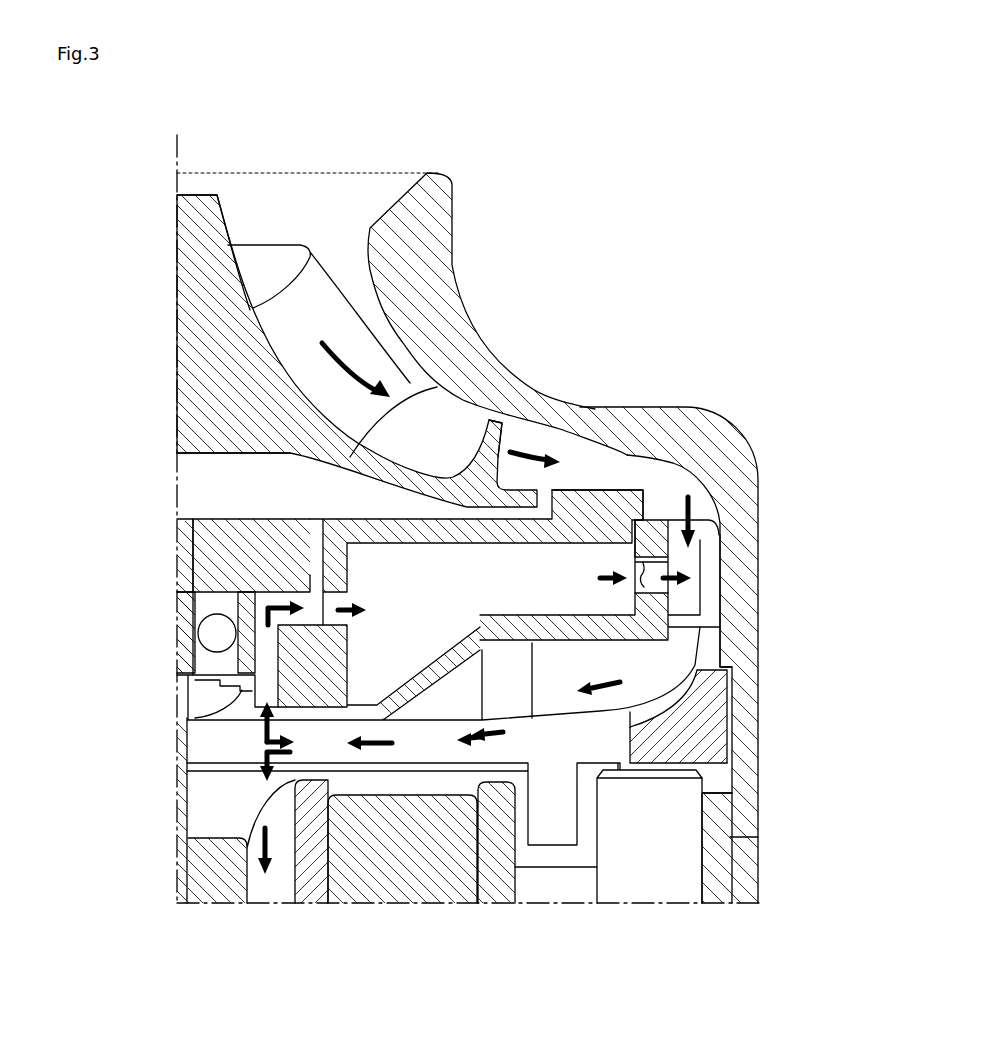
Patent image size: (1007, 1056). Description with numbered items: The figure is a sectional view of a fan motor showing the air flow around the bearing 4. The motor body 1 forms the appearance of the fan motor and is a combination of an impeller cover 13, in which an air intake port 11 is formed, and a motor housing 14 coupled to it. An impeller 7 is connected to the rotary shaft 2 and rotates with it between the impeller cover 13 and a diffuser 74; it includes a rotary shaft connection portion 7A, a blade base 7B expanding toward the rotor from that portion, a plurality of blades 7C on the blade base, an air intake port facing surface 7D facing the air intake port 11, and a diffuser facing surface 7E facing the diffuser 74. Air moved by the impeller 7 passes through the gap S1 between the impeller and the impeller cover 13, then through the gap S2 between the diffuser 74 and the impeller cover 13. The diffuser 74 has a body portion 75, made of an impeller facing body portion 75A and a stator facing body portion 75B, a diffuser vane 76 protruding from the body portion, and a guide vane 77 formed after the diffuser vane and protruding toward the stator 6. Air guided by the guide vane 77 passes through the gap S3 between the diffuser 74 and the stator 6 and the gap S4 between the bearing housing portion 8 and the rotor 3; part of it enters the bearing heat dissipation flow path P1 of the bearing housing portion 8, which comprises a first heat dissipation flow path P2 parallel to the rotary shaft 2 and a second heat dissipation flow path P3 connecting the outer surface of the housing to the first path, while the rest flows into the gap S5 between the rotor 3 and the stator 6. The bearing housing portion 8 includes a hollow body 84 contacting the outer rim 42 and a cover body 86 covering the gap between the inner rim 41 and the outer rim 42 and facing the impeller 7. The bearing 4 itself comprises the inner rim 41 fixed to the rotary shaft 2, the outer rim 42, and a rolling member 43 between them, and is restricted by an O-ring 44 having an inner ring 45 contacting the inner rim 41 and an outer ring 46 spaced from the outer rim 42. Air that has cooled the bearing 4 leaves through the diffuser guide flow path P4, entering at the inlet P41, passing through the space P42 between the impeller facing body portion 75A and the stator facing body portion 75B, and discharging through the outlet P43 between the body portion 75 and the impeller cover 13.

The motor body 1 is at (763, 750).
The rotary shaft 2 is at (185, 879).
The rotor 3 is at (199, 833).
The bearing 4 is at (168, 632).
The inner rim 41 is at (190, 603).
The outer rim 42 is at (248, 657).
The rolling member 43 is at (205, 634).
The O-ring 44 is at (180, 700).
The inner ring 45 is at (225, 687).
The outer ring 46 is at (225, 708).
The stator 6 is at (525, 857).
The impeller 7 is at (217, 197).
The rotary shaft connection portion 7A is at (197, 197).
The blade base 7B is at (370, 407).
The blades 7C is at (500, 425).
The air intake port facing surface 7D is at (312, 258).
The diffuser facing surface 7E is at (233, 447).
The bearing housing portion 8 is at (405, 851).
The hollow body 84 is at (300, 700).
The cover body 86 is at (347, 705).
The air intake port 11 is at (300, 188).
The impeller cover 13 is at (432, 193).
The motor housing 14 is at (760, 882).
The diffuser 74 is at (714, 607).
The body portion 75 is at (687, 454).
The impeller facing body portion 75A is at (640, 488).
The stator facing body portion 75B is at (664, 545).
The diffuser vane 76 is at (690, 595).
The guide vane 77 is at (702, 645).
The bearing heat dissipation flow path P1 is at (100, 535).
The first heat dissipation flow path P2 is at (262, 638).
The second heat dissipation flow path P3 is at (302, 596).
The diffuser guide flow path P4 is at (378, 568).
The inlet P41 is at (348, 592).
The space P42 is at (530, 578).
The outlet P43 is at (622, 560).
The gap S1 is at (377, 332).
The gap S2 is at (714, 584).
The gap S3 is at (446, 743).
The gap S4 is at (232, 752).
The gap S5 is at (276, 891).